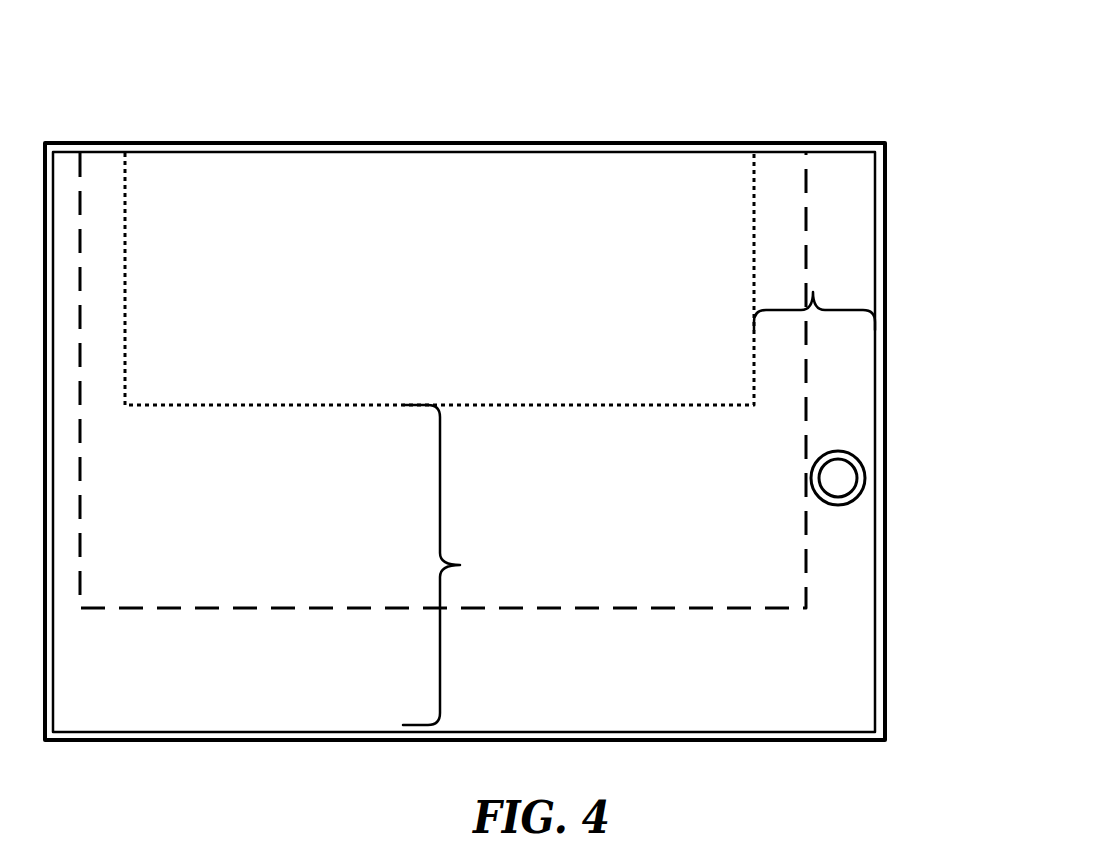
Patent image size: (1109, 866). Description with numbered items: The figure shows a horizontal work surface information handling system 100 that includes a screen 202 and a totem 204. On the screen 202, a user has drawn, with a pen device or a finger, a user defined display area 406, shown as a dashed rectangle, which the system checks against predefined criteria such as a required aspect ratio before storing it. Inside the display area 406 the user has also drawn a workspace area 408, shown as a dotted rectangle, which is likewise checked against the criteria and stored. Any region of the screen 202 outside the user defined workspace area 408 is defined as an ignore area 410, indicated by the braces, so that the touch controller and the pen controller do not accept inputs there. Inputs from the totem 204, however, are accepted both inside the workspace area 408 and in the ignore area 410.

The information handling system 100 is at (876, 68).
The screen 202 is at (860, 222).
The totem 204 is at (866, 478).
The display area 406 is at (767, 207).
The workspace area 408 is at (607, 202).
The ignore area 410 is at (639, 493).